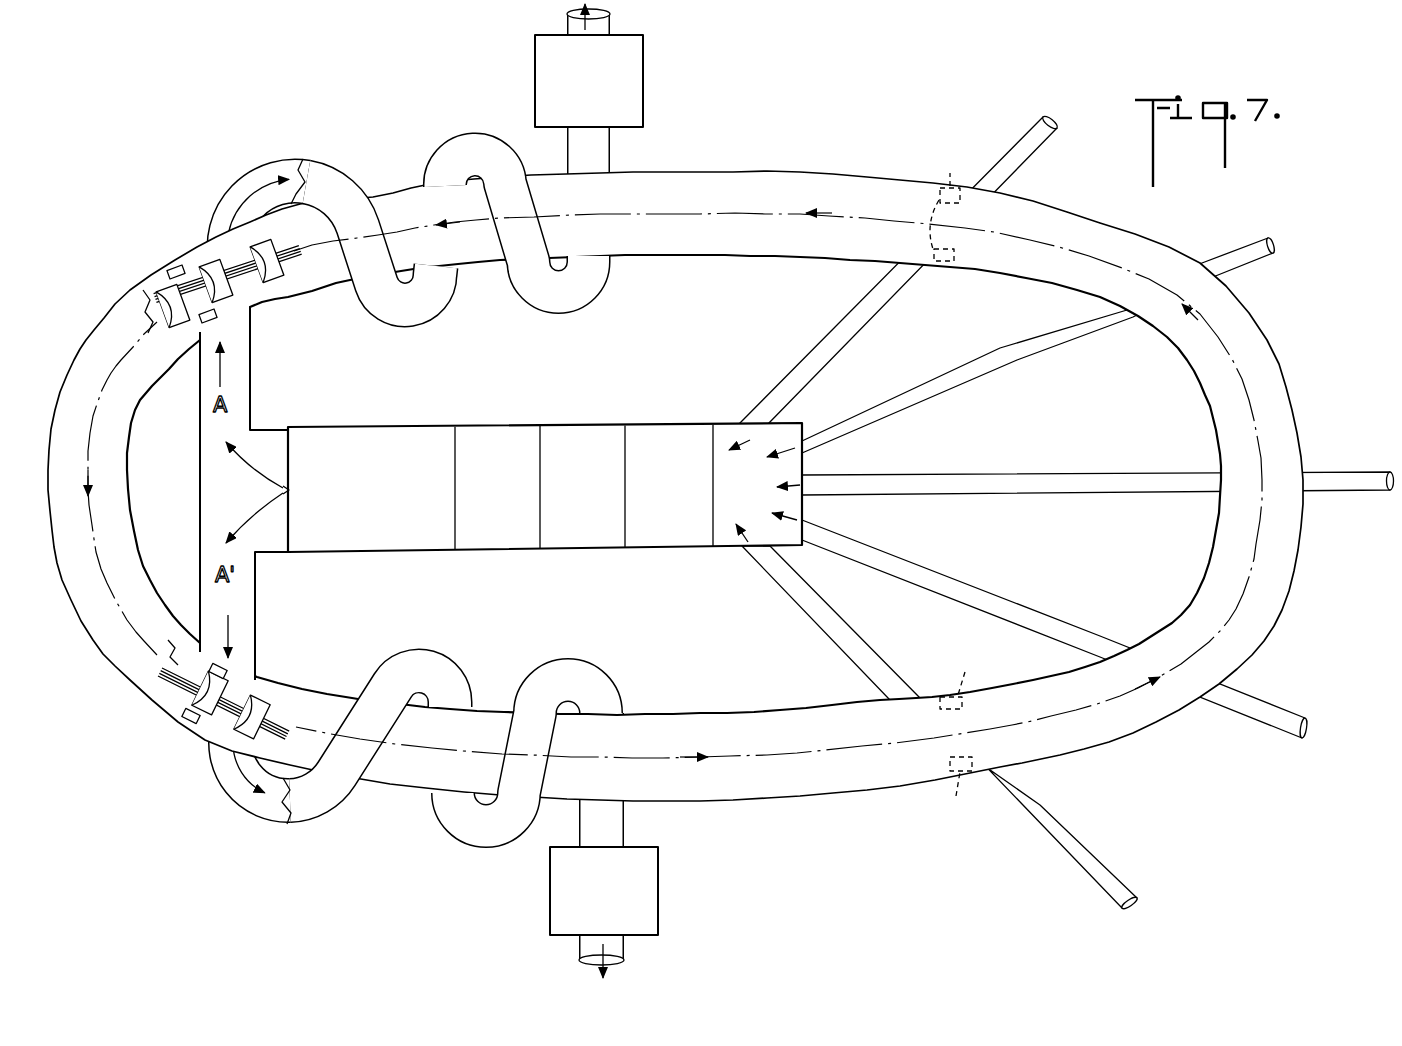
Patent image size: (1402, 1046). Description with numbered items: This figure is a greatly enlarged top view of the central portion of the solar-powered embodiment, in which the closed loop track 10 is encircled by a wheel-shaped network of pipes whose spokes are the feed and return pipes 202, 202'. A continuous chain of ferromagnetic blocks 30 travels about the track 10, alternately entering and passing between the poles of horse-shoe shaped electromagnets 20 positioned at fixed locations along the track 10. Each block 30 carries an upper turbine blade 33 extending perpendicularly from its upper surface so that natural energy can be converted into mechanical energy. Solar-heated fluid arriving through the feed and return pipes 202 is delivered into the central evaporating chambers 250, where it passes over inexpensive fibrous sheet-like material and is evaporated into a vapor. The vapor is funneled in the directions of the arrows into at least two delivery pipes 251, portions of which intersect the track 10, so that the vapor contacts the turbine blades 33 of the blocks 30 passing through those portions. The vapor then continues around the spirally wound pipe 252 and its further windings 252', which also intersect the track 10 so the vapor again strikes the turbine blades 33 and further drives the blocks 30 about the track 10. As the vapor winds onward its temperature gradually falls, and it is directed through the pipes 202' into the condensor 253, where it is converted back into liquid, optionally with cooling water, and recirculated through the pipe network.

The closed loop track 10 is at (387, 193).
The horse-shoe shaped electromagnet 20 is at (172, 263).
The block 30 is at (217, 260).
The upper turbine blade 33 is at (284, 266).
The feed and return pipe 202 is at (1030, 160).
The feed and return pipe 202' is at (646, 491).
The evaporating chamber 250 is at (380, 500).
The delivery pipe 251 is at (252, 375).
The spirally wound pipe 252 is at (283, 158).
The spirally wound pipe 252' is at (441, 490).
The condensor 253 is at (637, 83).